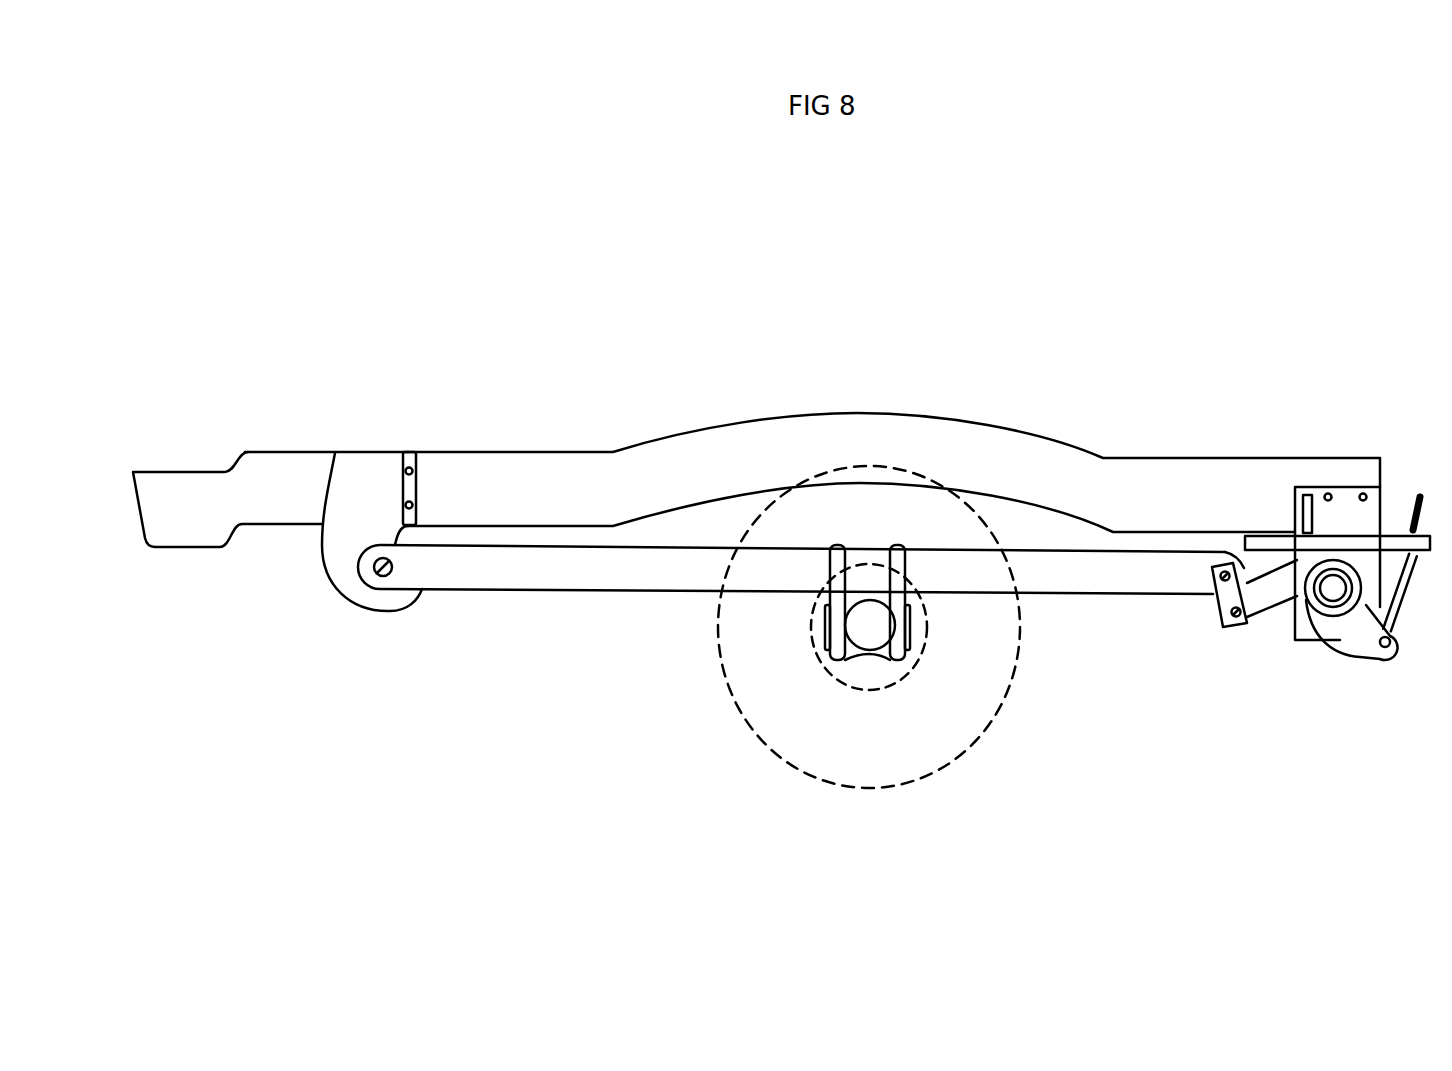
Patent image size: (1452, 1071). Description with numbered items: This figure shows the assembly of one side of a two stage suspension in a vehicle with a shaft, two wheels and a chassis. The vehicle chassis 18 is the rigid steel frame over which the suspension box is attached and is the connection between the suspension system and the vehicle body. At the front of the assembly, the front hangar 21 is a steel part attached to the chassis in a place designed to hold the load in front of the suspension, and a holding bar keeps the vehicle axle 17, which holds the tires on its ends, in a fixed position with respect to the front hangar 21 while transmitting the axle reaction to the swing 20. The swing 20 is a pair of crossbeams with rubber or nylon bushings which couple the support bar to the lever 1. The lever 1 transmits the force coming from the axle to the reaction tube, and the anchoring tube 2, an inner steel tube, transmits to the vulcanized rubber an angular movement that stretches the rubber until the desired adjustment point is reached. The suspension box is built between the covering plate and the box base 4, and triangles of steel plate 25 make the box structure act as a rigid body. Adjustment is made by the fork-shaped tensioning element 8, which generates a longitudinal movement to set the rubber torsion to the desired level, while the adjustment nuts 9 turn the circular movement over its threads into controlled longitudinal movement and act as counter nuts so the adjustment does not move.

The lever 1 is at (1246, 562).
The anchoring tube 2 is at (1336, 548).
The box base 4 is at (1313, 472).
The fork-shaped tensioning element 8 is at (1420, 470).
The adjustment nuts 9 is at (1410, 597).
The vehicle axle 17 is at (872, 615).
The vehicle chassis 18 is at (474, 438).
The swing 20 is at (1213, 632).
The front hangar 21 is at (400, 623).
The triangles of steel plate 25 is at (1285, 483).